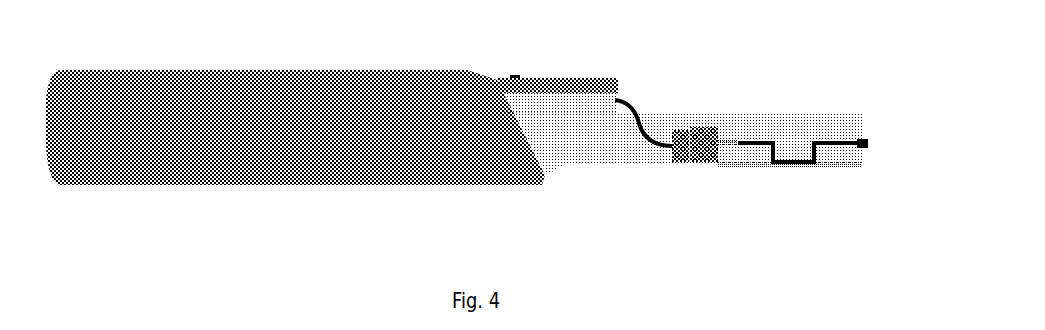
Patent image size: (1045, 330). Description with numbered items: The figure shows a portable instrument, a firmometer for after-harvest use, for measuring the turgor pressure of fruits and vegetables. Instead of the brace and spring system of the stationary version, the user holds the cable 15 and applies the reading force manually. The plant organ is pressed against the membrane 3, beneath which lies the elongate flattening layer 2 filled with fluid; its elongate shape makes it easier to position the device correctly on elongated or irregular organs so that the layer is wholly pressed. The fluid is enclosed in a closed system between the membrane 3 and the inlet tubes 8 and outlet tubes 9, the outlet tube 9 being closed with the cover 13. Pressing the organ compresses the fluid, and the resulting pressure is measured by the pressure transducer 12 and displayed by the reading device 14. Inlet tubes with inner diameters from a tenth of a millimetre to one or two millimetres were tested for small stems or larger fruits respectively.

The elongate flattening layer 2 is at (793, 152).
The membrane 3 is at (708, 167).
The inlet tube 8 is at (757, 135).
The outlet tube 9 is at (835, 135).
The pressure transducer 12 is at (705, 124).
The cover 13 is at (886, 138).
The reading device 14 is at (605, 65).
The cable 15 is at (538, 192).